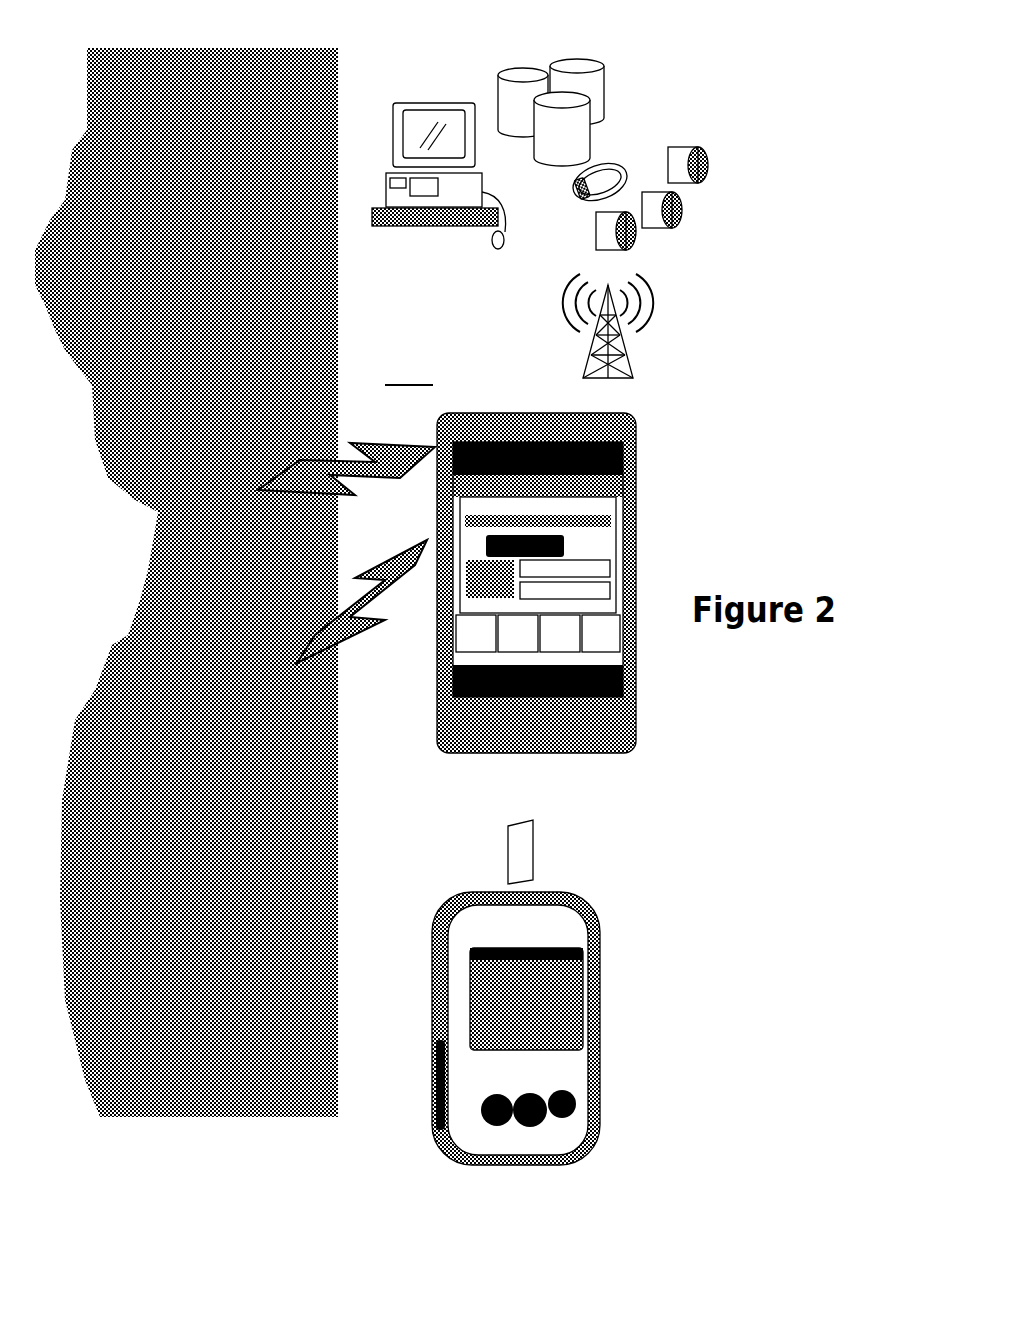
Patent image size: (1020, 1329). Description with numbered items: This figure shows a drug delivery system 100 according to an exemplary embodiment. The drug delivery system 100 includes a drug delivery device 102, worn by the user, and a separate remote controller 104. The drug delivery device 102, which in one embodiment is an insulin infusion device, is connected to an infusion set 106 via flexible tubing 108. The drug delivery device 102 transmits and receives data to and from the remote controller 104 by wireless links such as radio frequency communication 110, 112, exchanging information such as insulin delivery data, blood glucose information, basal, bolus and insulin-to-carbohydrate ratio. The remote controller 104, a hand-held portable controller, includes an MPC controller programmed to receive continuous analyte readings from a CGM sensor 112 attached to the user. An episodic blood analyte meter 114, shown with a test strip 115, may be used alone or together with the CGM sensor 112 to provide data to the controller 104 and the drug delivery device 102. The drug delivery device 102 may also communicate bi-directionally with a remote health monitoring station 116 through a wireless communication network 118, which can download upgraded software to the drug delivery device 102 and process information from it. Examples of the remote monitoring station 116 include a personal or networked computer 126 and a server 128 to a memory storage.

The drug delivery system 100 is at (409, 370).
The drug delivery device 102 is at (165, 715).
The remote controller 104 is at (637, 539).
The infusion set 106 is at (242, 570).
The flexible tubing 108 is at (253, 627).
The wireless communication link 110 is at (346, 469).
The radio frequency communication / CGM sensor 112 is at (180, 513).
The episodic blood analyte meter 114 is at (596, 946).
The test strip 115 is at (535, 845).
The remote health monitoring station 116 is at (660, 100).
The wireless communication network 118 is at (623, 326).
The personal or networked computer 126 is at (428, 103).
The server 128 is at (535, 60).